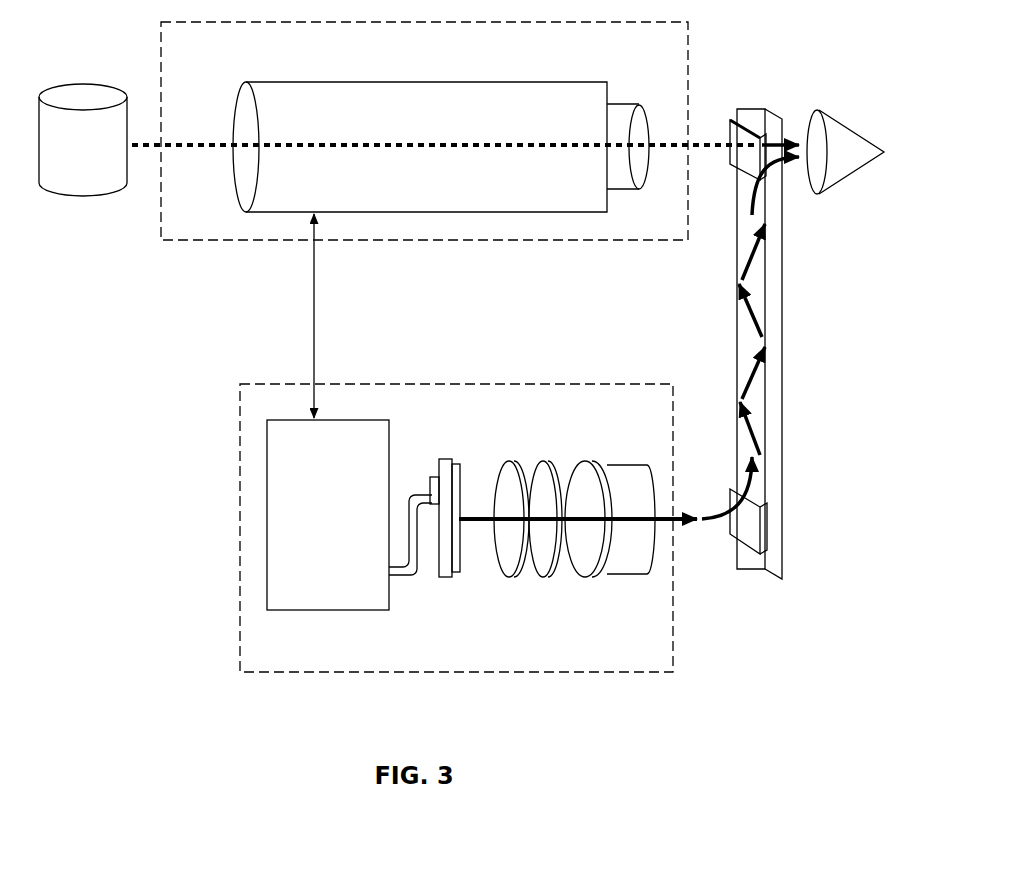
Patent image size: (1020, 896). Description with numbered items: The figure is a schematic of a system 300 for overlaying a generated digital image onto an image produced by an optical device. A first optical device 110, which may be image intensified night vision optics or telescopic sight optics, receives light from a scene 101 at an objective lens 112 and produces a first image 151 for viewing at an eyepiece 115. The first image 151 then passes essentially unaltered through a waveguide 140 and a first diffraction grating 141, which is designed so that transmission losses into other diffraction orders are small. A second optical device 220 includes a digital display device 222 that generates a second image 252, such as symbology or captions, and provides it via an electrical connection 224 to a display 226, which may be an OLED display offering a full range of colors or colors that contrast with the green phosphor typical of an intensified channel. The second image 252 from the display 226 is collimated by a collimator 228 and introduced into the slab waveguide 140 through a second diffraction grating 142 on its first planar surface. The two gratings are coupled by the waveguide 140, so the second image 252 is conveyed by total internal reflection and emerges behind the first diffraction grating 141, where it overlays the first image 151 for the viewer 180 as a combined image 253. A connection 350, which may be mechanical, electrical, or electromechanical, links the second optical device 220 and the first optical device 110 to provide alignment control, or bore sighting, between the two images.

The scene 101 is at (65, 153).
The first optical device 110 is at (409, 45).
The objective lens 112 is at (247, 163).
The eyepiece 115 is at (648, 181).
The first image 151 is at (675, 138).
The combined image 253 is at (793, 118).
The viewer 180 is at (840, 132).
The first diffraction grating 141 is at (732, 162).
The waveguide 140 is at (773, 368).
The second diffraction grating 142 is at (737, 525).
The second optical device 220 is at (441, 407).
The digital display device 222 is at (310, 523).
The connection 350 is at (322, 300).
The electrical connection 224 is at (400, 578).
The display 226 is at (458, 470).
The second image 252 is at (478, 524).
The collimator 228 is at (487, 583).
The system 300 is at (785, 654).